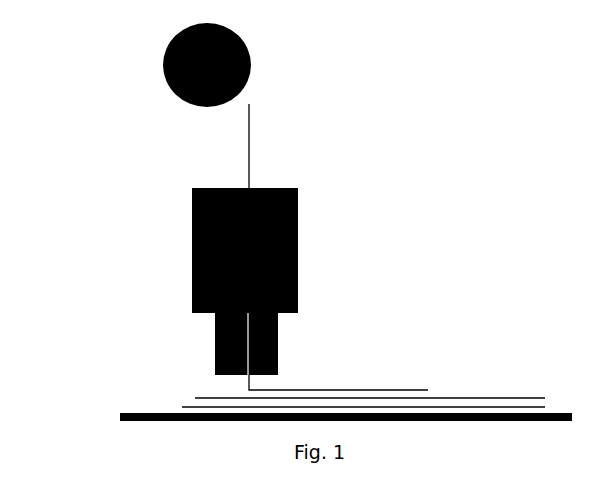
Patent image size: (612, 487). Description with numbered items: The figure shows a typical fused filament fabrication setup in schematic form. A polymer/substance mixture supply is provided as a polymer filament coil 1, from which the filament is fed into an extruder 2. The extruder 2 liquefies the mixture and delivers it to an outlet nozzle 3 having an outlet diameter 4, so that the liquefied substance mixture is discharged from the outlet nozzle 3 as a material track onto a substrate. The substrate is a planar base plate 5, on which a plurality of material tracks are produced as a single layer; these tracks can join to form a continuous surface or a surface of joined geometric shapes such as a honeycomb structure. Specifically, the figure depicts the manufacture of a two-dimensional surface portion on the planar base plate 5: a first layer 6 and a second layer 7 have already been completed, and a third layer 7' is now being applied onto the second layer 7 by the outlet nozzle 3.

The polymer filament coil 1 is at (157, 31).
The extruder 2 is at (302, 203).
The outlet nozzle 3 is at (215, 343).
The outlet diameter 4 is at (253, 380).
The planar base plate 5 is at (120, 415).
The first layer 6 is at (183, 403).
The second layer 7 is at (330, 369).
The third layer 7' is at (427, 356).